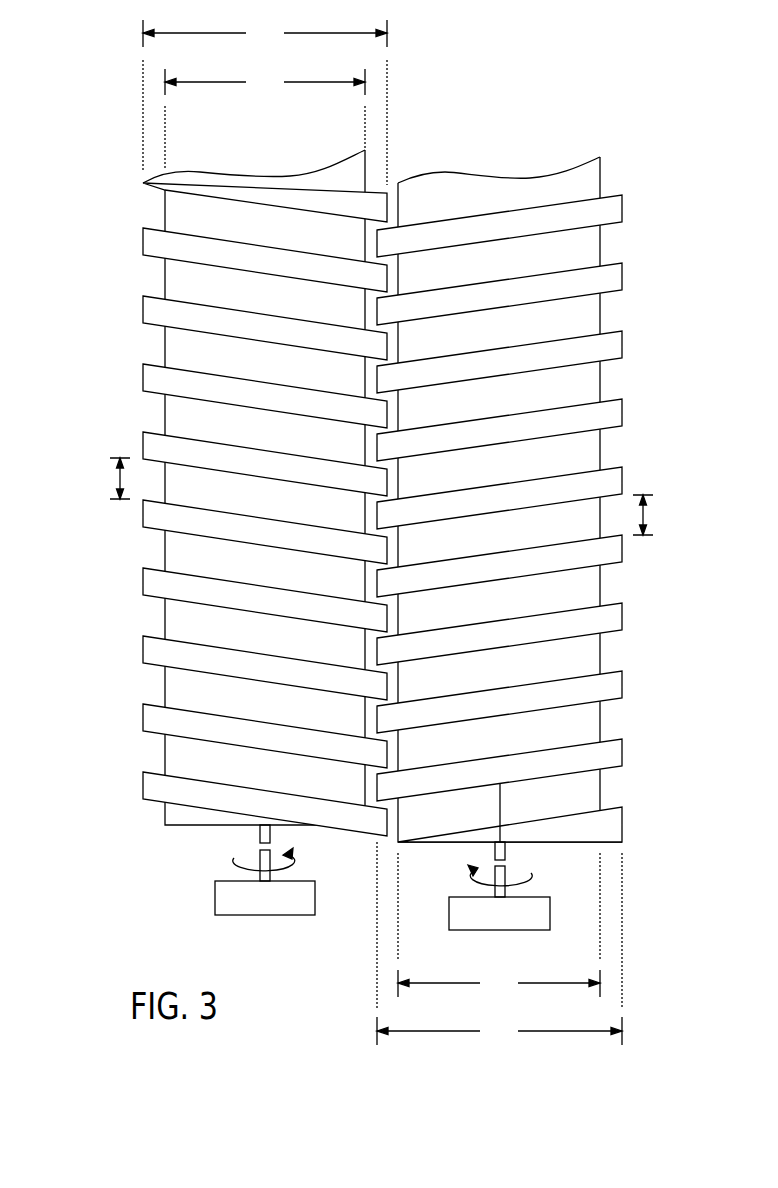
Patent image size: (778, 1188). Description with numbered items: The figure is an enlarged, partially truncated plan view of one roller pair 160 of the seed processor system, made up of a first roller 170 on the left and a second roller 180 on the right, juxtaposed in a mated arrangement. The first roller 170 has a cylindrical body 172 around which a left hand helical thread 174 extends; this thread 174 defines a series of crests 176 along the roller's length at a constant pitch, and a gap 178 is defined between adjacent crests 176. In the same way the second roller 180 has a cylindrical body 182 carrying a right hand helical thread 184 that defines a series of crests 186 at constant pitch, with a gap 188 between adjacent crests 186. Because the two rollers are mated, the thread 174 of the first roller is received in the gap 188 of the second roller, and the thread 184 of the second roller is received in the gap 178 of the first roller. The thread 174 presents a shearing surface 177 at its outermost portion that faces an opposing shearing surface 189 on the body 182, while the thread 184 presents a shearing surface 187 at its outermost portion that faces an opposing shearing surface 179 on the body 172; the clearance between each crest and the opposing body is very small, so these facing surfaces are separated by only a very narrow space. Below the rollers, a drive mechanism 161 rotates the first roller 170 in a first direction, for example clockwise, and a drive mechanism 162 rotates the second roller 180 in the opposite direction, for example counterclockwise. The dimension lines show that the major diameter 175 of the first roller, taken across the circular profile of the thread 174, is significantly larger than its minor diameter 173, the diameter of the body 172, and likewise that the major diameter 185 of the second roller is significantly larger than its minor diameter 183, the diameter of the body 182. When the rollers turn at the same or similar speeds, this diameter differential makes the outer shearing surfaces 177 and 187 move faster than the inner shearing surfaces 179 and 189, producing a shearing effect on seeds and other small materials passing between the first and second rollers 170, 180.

The roller pair 160 is at (560, 88).
The drive mechanism 161 is at (250, 910).
The drive mechanism 162 is at (485, 925).
The first roller 170 is at (179, 832).
The cylindrical body 172 is at (185, 757).
The minor diameter 173 is at (265, 119).
The left hand helical thread 174 is at (156, 719).
The major diameter 175 is at (265, 102).
The crests 176 is at (142, 510).
The shearing surface 177 is at (388, 413).
The gap 178 is at (118, 480).
The shearing surface 179 is at (398, 229).
The second roller 180 is at (628, 819).
The cylindrical body 182 is at (585, 792).
The minor diameter 183 is at (499, 925).
The right hand helical thread 184 is at (608, 757).
The major diameter 185 is at (499, 943).
The crests 186 is at (622, 548).
The shearing surface 187 is at (375, 243).
The gap 188 is at (655, 517).
The shearing surface 189 is at (397, 427).